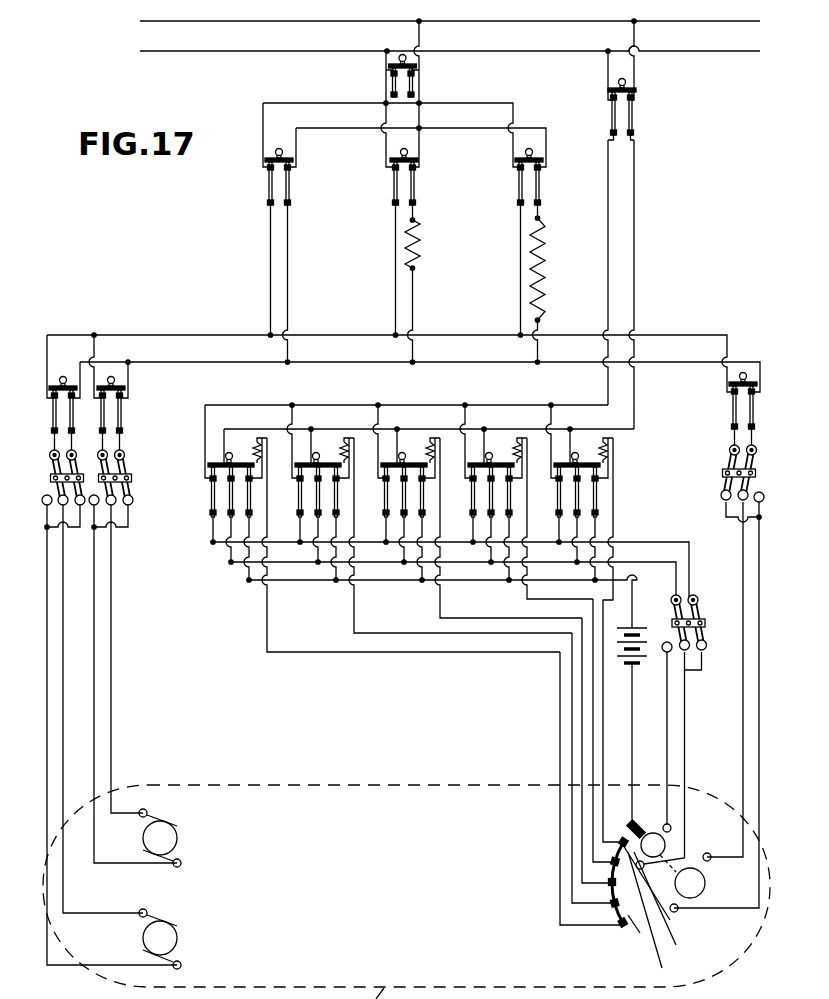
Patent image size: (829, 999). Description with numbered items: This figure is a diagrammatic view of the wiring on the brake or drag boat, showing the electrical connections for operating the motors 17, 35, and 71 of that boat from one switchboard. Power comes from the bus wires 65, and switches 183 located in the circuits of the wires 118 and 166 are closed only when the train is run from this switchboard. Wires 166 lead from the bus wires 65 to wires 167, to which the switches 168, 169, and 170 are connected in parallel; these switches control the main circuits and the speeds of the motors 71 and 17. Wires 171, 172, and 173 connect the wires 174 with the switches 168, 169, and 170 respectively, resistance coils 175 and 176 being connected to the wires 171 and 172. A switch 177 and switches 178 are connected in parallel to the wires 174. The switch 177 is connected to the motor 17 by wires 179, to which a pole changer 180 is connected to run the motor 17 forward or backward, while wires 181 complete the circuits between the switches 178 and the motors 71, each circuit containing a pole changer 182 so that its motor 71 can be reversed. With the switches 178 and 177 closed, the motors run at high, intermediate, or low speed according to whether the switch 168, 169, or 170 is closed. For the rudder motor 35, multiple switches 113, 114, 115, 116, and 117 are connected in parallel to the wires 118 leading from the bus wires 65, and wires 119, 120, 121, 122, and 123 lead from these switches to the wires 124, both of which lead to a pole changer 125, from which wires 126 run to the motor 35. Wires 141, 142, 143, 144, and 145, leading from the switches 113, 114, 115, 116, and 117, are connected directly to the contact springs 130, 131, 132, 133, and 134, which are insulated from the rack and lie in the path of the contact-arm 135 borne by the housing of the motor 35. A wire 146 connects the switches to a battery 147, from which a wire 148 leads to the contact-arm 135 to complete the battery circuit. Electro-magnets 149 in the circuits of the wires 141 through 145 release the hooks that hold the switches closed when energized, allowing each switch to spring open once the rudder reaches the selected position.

The bus wires 65 is at (497, 21).
The wires 166 is at (386, 64).
The switches 183 is at (413, 78).
The wires 167 is at (305, 104).
The switch 168 is at (268, 189).
The switch 169 is at (395, 189).
The switch 170 is at (520, 189).
The wires 118 is at (607, 222).
The wire 171 is at (270, 280).
The wire 172 is at (394, 270).
The wire 173 is at (518, 270).
The resistance coil 175 is at (420, 234).
The resistance coil 176 is at (541, 262).
The wires 174 is at (170, 335).
The switches 178 is at (54, 418).
The pole changer 182 is at (57, 476).
The wires 181 is at (47, 632).
The switch 177 is at (733, 413).
The pole changer 180 is at (724, 462).
The wires 179 is at (742, 663).
The multiple switch 113 is at (212, 499).
The multiple switch 114 is at (300, 499).
The multiple switch 115 is at (386, 499).
The multiple switch 116 is at (473, 499).
The multiple switch 117 is at (559, 499).
The electro-magnets 149 is at (419, 447).
The wire 119 is at (230, 530).
The wire 120 is at (317, 531).
The wire 121 is at (403, 531).
The wire 122 is at (490, 531).
The wire 123 is at (576, 531).
The wires 124 is at (655, 541).
The wire 146 is at (278, 583).
The wire 145 is at (616, 528).
The wire 144 is at (535, 600).
The wire 143 is at (452, 618).
The wire 142 is at (365, 633).
The wire 141 is at (280, 652).
The pole changer 125 is at (698, 632).
The wires 126 is at (667, 698).
The battery 147 is at (630, 665).
The wire 148 is at (632, 733).
The motors 71 is at (160, 889).
The contact spring 130 is at (617, 926).
The contact spring 131 is at (630, 934).
The contact spring 132 is at (644, 914).
The contact spring 133 is at (669, 904).
The contact spring 134 is at (662, 889).
The contact-arm 135 is at (640, 823).
The motor 35 is at (668, 841).
The motor 17 is at (690, 883).